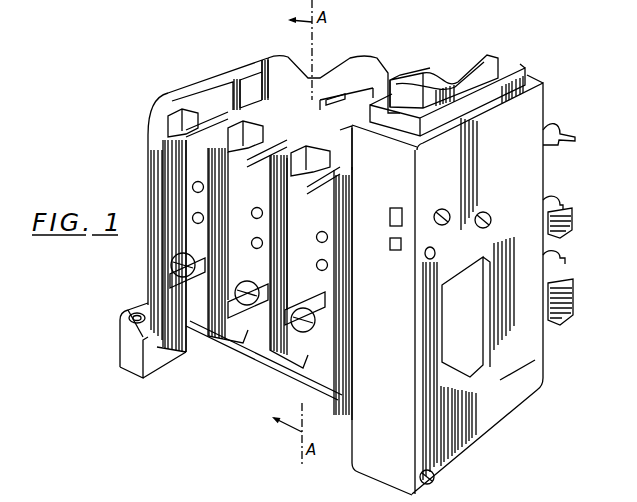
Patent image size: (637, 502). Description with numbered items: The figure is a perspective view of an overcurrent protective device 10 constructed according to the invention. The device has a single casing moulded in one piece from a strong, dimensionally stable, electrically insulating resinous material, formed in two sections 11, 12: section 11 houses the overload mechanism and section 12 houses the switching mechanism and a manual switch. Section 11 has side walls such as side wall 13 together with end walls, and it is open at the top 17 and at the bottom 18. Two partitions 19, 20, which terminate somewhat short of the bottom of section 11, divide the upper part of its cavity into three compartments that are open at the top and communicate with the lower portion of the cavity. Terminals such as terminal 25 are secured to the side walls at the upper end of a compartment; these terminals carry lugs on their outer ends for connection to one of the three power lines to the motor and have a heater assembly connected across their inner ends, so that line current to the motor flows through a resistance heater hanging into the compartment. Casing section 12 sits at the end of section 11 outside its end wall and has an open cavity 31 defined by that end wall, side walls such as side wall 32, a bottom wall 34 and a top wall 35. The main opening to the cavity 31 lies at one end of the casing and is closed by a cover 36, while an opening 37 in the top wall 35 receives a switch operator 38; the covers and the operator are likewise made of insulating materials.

The device 10 is at (170, 72).
The casing section 11 is at (388, 65).
The casing section 12 is at (530, 170).
The side wall 13 is at (202, 322).
The top 17 is at (331, 95).
The bottom 18 is at (283, 377).
The partition 19 is at (334, 136).
The partition 20 is at (247, 110).
The terminal 25 is at (245, 305).
The open cavity 31 is at (460, 333).
The side wall 32 is at (382, 453).
The bottom wall 34 is at (468, 448).
The top wall 35 is at (497, 86).
The cover 36 is at (508, 393).
The opening 37 is at (475, 62).
The switch operator 38 is at (441, 78).